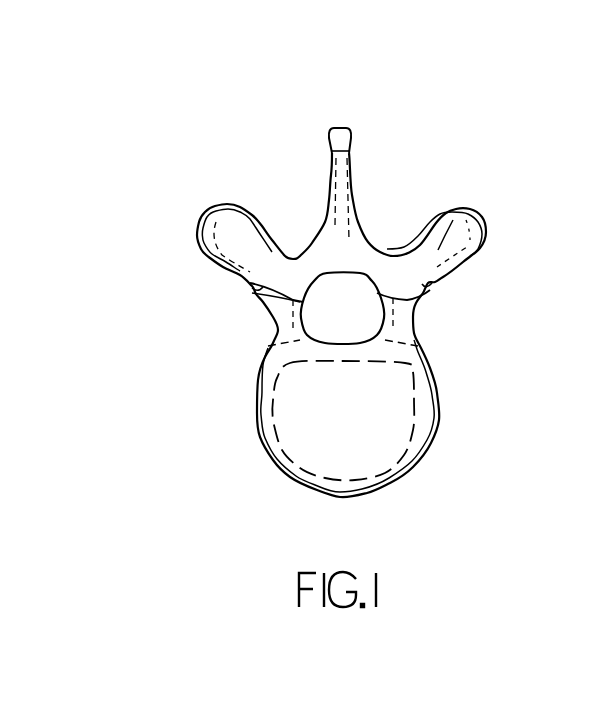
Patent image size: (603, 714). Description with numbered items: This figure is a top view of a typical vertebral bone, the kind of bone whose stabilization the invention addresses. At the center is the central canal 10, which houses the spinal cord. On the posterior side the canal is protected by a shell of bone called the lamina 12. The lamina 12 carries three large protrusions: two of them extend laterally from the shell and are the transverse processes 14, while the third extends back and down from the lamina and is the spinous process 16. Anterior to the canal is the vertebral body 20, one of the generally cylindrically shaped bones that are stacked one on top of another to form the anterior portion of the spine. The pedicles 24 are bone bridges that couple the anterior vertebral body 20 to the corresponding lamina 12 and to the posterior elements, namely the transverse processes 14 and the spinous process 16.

The lamina 12 is at (406, 176).
The spinous process 16 is at (343, 127).
The transverse process 14 is at (212, 207).
The pedicles 24 is at (283, 319).
The central canal 10 is at (358, 322).
The vertebral body 20 is at (368, 432).